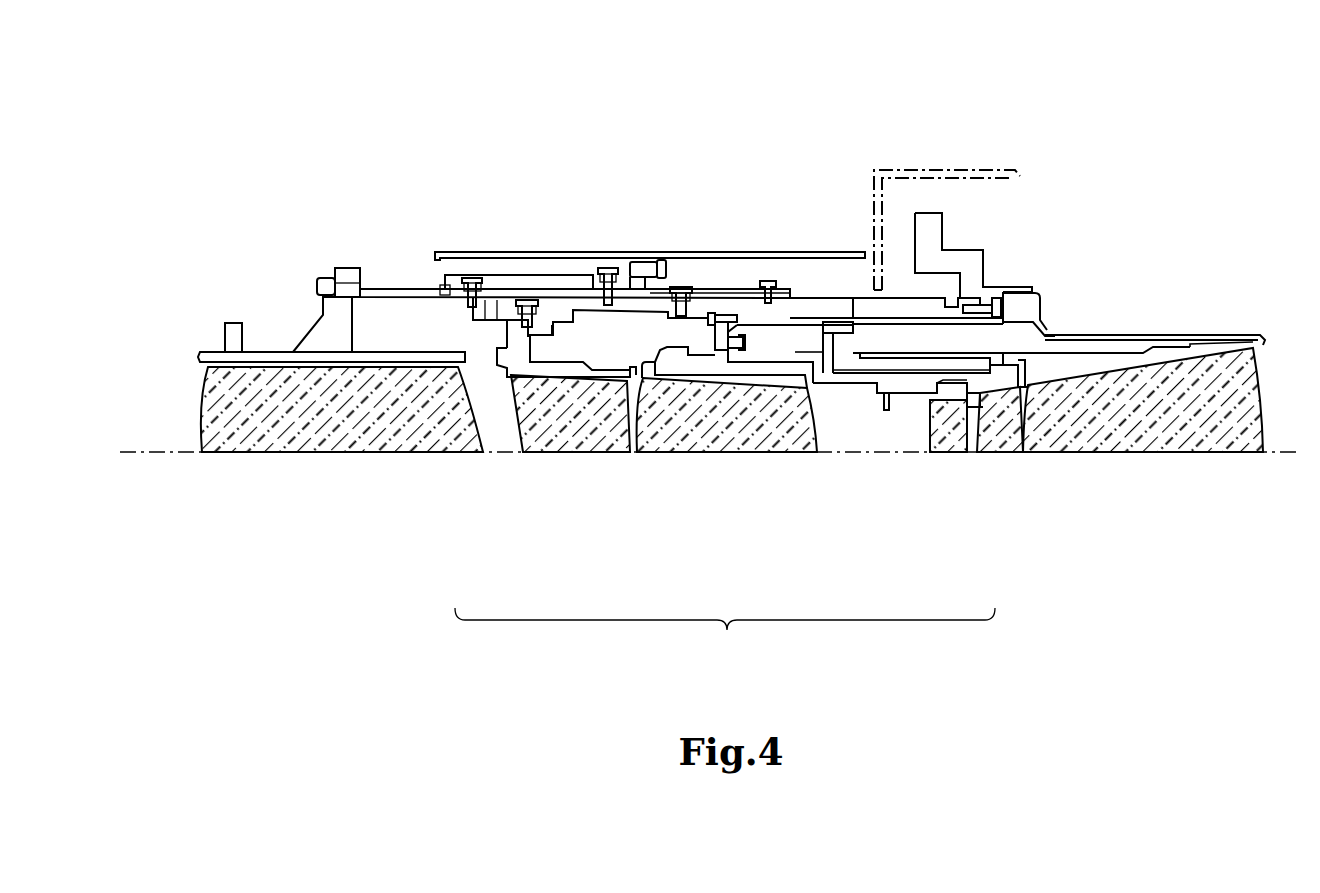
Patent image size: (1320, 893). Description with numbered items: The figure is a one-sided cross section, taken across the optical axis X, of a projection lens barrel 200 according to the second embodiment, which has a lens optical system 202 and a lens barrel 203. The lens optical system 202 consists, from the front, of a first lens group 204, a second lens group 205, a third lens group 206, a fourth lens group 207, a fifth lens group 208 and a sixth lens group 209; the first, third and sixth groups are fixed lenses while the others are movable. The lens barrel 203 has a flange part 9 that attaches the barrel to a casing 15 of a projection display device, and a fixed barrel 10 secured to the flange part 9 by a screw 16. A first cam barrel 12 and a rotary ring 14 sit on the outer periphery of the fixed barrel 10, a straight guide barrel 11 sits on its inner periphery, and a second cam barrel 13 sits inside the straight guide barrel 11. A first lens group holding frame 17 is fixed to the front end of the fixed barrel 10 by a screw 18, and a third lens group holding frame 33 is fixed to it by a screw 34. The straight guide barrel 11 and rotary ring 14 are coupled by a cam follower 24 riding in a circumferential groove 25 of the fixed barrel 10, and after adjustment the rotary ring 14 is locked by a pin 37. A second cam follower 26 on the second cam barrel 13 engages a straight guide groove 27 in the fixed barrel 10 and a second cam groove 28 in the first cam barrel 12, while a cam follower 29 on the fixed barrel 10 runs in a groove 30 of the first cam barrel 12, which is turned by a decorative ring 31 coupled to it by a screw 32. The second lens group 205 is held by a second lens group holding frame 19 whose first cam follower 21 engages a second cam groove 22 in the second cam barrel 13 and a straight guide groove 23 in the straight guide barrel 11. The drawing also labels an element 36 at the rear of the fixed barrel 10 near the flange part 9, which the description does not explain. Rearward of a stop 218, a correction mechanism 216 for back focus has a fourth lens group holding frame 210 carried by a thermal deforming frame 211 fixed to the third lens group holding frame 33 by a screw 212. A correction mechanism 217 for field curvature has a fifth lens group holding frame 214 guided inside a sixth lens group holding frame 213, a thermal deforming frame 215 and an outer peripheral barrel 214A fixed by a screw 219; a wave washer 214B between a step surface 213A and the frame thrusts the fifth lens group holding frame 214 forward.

The optical axis X is at (132, 446).
The projection lens barrel 200 is at (346, 148).
The lens optical system 202 is at (725, 634).
The lens barrel 203 is at (571, 155).
The first lens group 204 is at (358, 438).
The second lens group 205 is at (553, 440).
The third lens group 206 is at (708, 452).
The fourth lens group 207 is at (960, 452).
The fifth lens group 208 is at (992, 452).
The sixth lens group 209 is at (1133, 452).
The flange part 9 is at (942, 232).
The fixed barrel 10 is at (815, 297).
The straight guide barrel 11 is at (575, 300).
The first cam barrel 12 is at (522, 255).
The second cam barrel 13 is at (467, 307).
The rotary ring 14 is at (740, 290).
The casing 15 is at (917, 170).
The screw 16 is at (995, 300).
The first lens group holding frame 17 is at (294, 349).
The screw 18 is at (318, 285).
The second lens group holding frame 19 is at (502, 360).
The first cam follower 21 is at (545, 305).
The second cam groove 22 is at (510, 300).
The straight guide groove 23 is at (552, 300).
The cam follower 24 is at (712, 288).
The groove 25 is at (667, 290).
The second cam follower 26 is at (483, 288).
The straight guide groove 27 is at (443, 290).
The second cam groove 28 is at (462, 278).
The cam follower 29 is at (622, 285).
The groove 30 is at (591, 290).
The decorative ring 31 is at (750, 290).
The screw 32 is at (653, 262).
The third lens group holding frame 33 is at (815, 383).
The screw 34 is at (707, 318).
The flange 36 is at (860, 300).
The pin 37 is at (772, 288).
The fourth lens group holding frame 210 is at (928, 393).
The thermal deforming frame 211 is at (842, 383).
The screw 212 is at (808, 342).
The sixth lens group holding frame 213 is at (1150, 345).
The step surface 213A is at (1042, 372).
The fifth lens group holding frame 214 is at (1003, 390).
The outer peripheral barrel 214A is at (868, 368).
The wave washer 214B is at (1030, 367).
The thermal deforming frame 215 is at (910, 373).
The correction mechanism 216 is at (830, 325).
The correction mechanism 217 is at (967, 340).
The stop 218 is at (886, 395).
The screw 219 is at (858, 341).